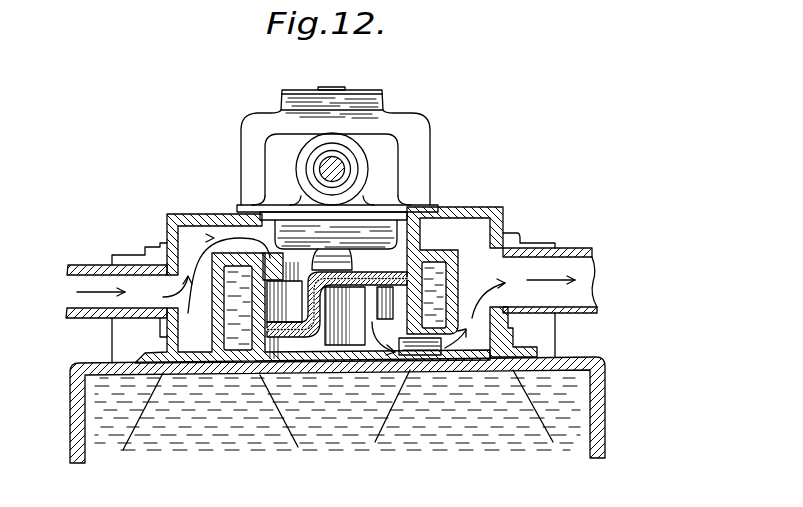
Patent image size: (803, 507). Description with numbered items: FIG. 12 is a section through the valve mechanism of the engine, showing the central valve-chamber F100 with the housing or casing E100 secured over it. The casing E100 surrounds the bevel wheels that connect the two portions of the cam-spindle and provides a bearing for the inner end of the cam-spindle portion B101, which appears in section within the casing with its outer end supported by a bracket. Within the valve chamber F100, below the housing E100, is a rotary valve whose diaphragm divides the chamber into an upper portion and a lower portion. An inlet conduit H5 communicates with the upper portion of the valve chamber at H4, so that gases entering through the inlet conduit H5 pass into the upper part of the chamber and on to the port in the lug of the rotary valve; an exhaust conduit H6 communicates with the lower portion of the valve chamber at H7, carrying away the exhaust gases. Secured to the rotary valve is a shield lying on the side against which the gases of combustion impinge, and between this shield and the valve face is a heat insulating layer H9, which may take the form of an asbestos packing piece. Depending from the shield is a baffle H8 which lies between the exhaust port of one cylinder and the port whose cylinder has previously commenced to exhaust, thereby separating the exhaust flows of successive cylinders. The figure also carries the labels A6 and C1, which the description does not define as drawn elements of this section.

The housing or casing E100 is at (344, 164).
The cam-spindle portion B101 is at (350, 158).
The inlet communication H4 is at (195, 312).
The inlet conduit H5 is at (68, 230).
The exhaust conduit H6 is at (588, 275).
The heat insulating layer H9 is at (380, 273).
The armature A6 is at (350, 325).
The conduit C1 is at (223, 488).
The baffle H8 is at (329, 488).
The central valve-chamber F100 is at (399, 484).
The exhaust communication H7 is at (433, 340).